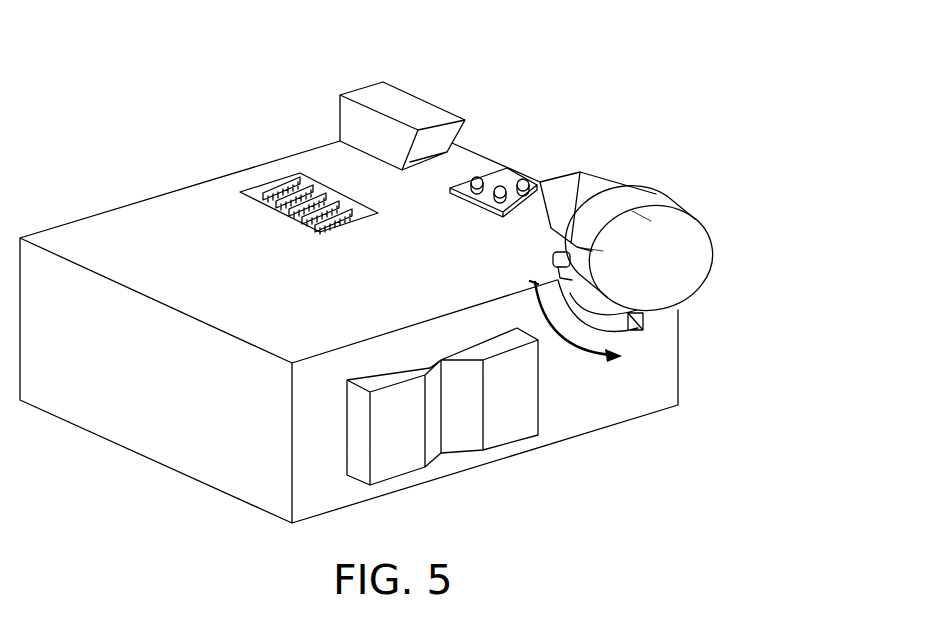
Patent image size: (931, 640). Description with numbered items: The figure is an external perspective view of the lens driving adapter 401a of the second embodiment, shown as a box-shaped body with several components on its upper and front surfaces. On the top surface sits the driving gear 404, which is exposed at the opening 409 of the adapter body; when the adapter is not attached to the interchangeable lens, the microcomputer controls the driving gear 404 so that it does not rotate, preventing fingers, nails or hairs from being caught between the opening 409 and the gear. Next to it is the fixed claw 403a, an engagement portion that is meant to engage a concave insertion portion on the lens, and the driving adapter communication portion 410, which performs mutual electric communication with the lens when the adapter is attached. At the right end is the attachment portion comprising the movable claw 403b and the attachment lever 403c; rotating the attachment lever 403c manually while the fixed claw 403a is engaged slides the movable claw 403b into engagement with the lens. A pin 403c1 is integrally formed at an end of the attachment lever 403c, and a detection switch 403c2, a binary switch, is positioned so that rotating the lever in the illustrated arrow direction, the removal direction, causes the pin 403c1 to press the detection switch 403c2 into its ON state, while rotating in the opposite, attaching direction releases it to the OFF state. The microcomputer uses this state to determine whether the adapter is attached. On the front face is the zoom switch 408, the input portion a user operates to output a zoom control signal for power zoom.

The lens driving adapter 401a is at (157, 197).
The fixed claw 403a is at (420, 59).
The movable claw 403b is at (593, 182).
The attachment lever 403c is at (707, 222).
The pin 403c1 is at (566, 268).
The detection switch 403c2 is at (647, 330).
The driving gear 404 is at (328, 178).
The zoom switch 408 is at (510, 423).
The opening 409 is at (258, 190).
The driving adapter communication portion 410 is at (500, 178).